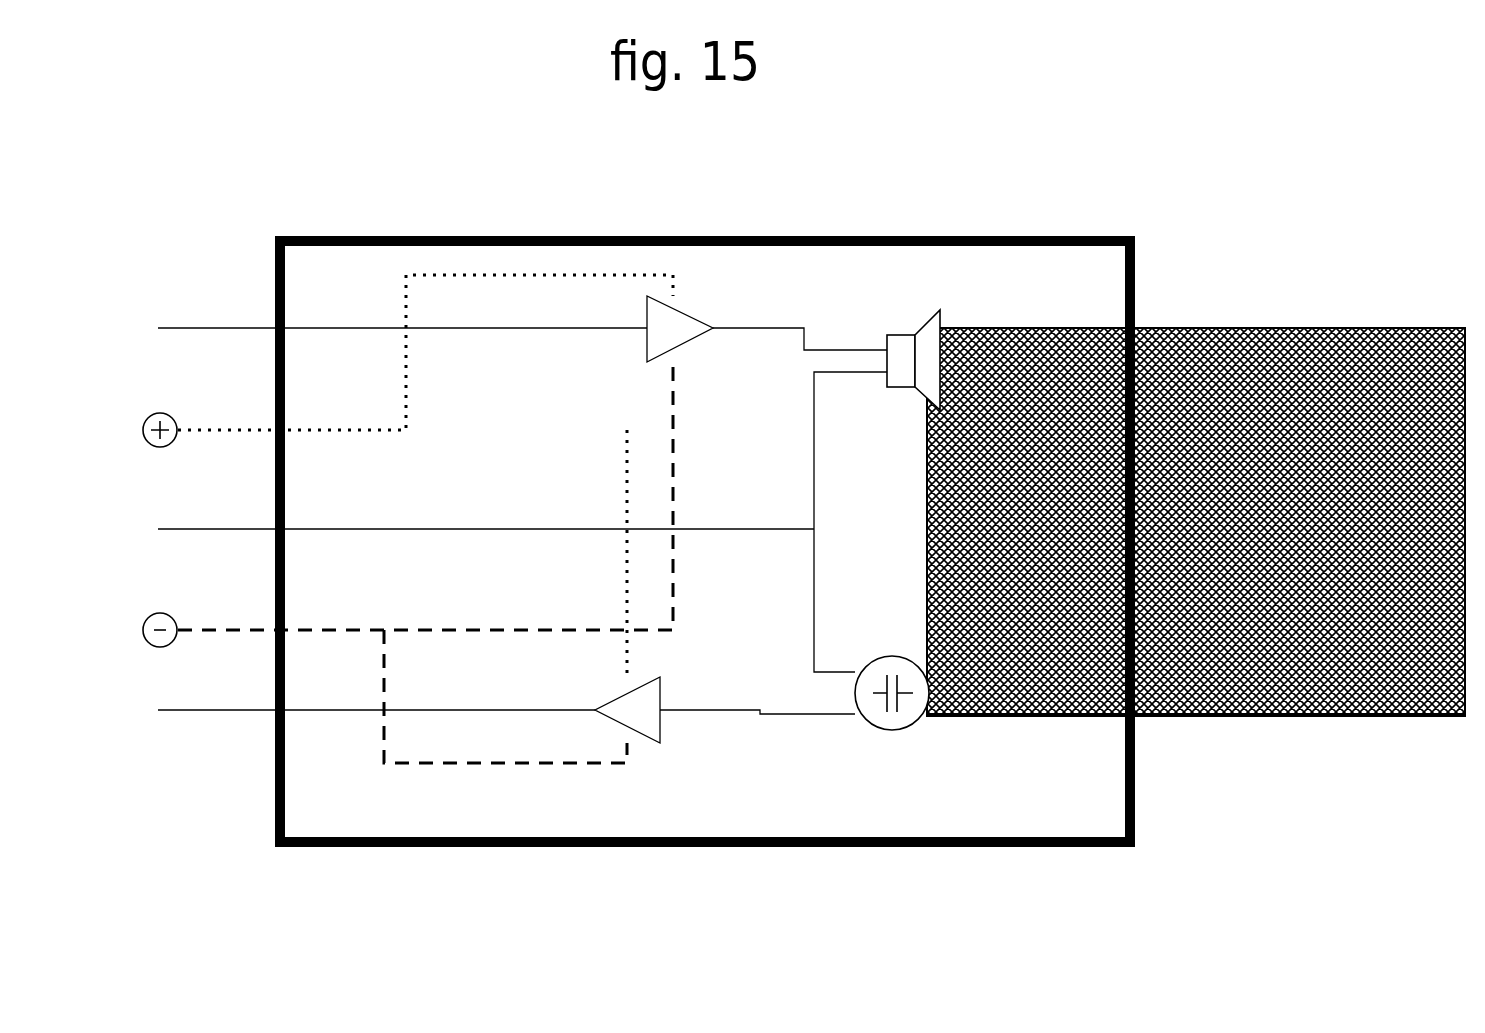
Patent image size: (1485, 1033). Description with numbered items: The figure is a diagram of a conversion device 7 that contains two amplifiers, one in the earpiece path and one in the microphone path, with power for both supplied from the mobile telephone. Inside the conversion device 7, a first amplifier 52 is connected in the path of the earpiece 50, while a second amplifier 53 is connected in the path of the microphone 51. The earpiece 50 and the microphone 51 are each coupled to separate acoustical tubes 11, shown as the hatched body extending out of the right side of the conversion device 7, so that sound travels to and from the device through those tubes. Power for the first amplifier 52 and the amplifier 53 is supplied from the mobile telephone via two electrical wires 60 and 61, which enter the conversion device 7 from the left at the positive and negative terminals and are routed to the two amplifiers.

The conversion device 7 is at (650, 214).
The acoustical tube 11 is at (1344, 765).
The earpiece 50 is at (883, 410).
The microphone 51 is at (883, 630).
The first amplifier 52 is at (700, 301).
The amplifier 53 is at (672, 680).
The electrical wire 60 is at (385, 434).
The electrical wire 61 is at (377, 622).